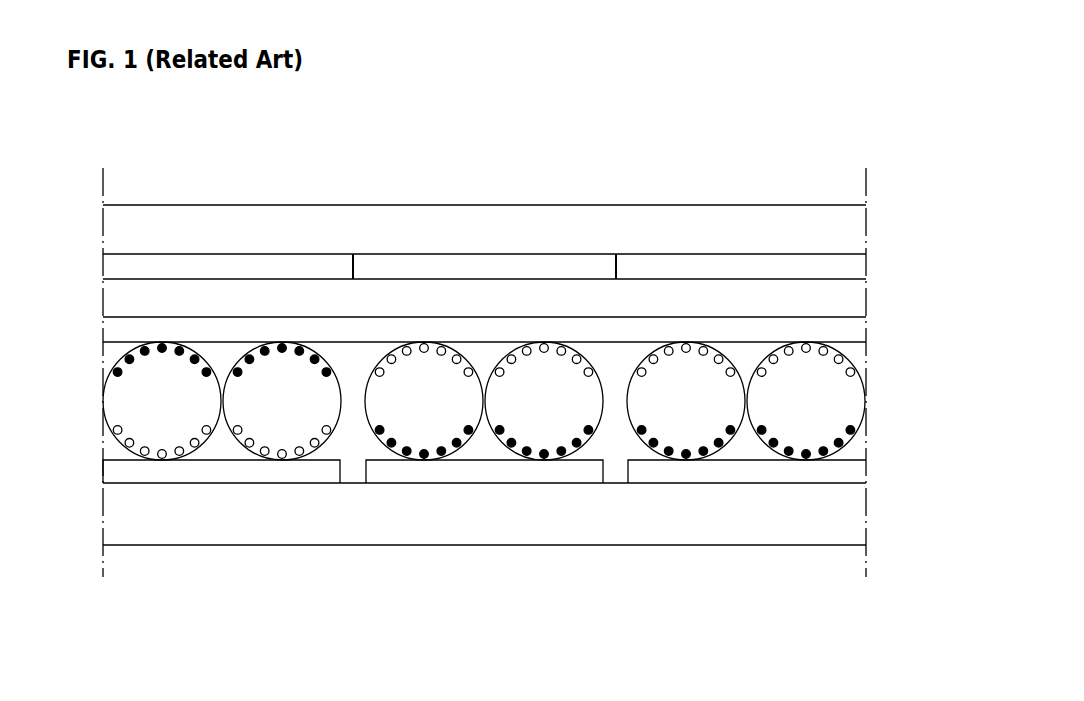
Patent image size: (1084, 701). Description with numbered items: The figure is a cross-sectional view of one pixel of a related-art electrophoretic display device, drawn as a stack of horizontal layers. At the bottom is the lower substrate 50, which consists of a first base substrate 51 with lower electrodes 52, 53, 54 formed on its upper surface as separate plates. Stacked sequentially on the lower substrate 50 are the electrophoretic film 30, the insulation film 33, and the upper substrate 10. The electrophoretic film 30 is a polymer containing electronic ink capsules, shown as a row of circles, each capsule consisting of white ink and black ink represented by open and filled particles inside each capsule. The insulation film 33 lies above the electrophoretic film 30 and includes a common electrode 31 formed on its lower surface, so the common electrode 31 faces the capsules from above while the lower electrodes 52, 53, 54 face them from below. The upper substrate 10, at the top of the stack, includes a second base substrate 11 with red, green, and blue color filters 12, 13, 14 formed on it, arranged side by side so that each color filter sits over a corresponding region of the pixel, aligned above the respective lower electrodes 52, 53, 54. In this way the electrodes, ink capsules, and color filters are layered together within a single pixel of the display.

The upper substrate 10 is at (484, 191).
The second base substrate 11 is at (437, 217).
The red color filter 12 is at (325, 257).
The green color filter 13 is at (517, 258).
The blue color filter 14 is at (741, 218).
The electrophoretic film 30 is at (873, 342).
The common electrode 31 is at (864, 327).
The insulation film 33 is at (864, 292).
The lower substrate 50 is at (484, 567).
The first base substrate 51 is at (412, 533).
The lower electrode 52 is at (288, 472).
The lower electrode 53 is at (486, 475).
The lower electrode 54 is at (747, 537).